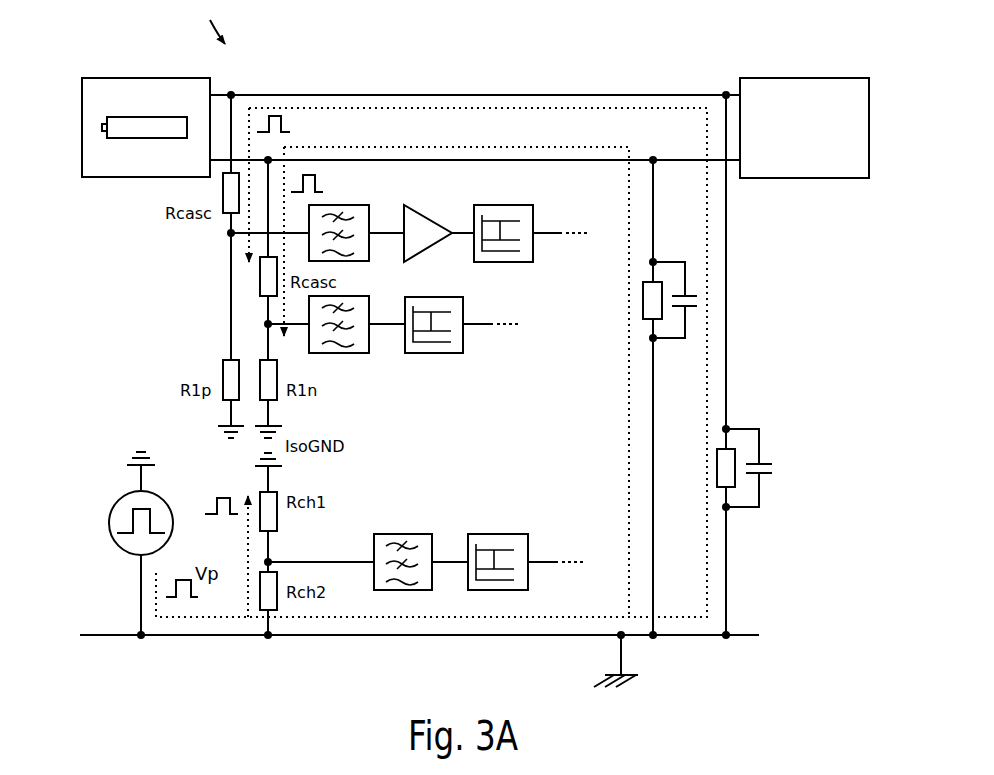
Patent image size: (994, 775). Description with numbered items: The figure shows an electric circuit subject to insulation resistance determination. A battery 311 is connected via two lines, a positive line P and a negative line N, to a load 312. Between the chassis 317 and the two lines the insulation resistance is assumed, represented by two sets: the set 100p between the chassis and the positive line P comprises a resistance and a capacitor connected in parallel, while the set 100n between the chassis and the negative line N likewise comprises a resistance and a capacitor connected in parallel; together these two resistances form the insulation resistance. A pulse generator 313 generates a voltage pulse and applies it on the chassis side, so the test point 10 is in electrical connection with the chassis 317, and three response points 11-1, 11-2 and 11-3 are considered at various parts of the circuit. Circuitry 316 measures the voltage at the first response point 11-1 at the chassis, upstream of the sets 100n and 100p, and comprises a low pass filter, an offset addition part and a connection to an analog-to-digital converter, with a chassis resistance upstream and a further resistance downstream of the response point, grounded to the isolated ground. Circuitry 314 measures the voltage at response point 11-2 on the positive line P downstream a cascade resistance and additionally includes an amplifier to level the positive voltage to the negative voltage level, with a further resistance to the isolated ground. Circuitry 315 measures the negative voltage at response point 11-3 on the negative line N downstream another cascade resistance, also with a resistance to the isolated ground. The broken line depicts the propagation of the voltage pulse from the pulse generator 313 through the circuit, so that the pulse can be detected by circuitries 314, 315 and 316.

The battery 311 is at (108, 78).
The load 312 is at (803, 78).
The pulse generator 313 is at (116, 502).
The circuitry for measuring a positive voltage 314 is at (523, 283).
The circuitry for measuring the negative voltage 315 is at (486, 359).
The circuitry for measuring the chassis voltage 316 is at (458, 511).
The chassis 317 is at (629, 678).
The test point 10 is at (140, 633).
The first response point 11-1 is at (268, 562).
The second response point 11-2 is at (231, 233).
The third response point 11-3 is at (268, 324).
The set of insulation resistance for the negative line 100n is at (691, 255).
The set of insulation resistance for the positive line 100p is at (773, 430).
The positive line P is at (326, 95).
The negative line N is at (577, 161).